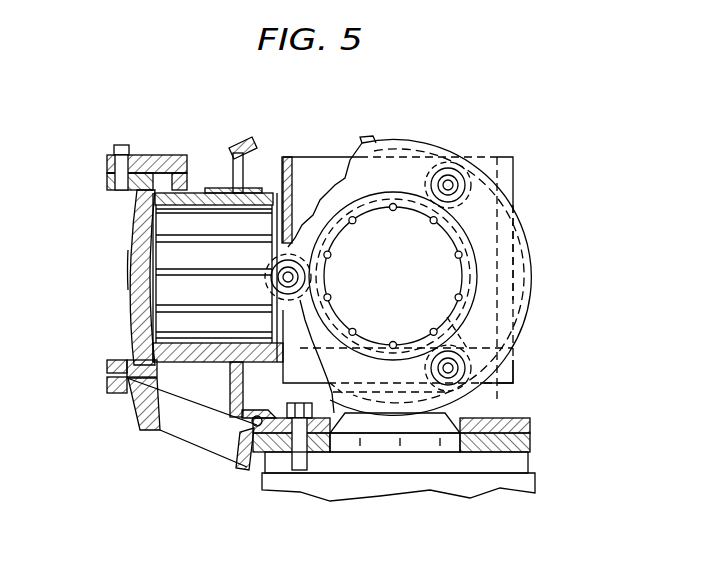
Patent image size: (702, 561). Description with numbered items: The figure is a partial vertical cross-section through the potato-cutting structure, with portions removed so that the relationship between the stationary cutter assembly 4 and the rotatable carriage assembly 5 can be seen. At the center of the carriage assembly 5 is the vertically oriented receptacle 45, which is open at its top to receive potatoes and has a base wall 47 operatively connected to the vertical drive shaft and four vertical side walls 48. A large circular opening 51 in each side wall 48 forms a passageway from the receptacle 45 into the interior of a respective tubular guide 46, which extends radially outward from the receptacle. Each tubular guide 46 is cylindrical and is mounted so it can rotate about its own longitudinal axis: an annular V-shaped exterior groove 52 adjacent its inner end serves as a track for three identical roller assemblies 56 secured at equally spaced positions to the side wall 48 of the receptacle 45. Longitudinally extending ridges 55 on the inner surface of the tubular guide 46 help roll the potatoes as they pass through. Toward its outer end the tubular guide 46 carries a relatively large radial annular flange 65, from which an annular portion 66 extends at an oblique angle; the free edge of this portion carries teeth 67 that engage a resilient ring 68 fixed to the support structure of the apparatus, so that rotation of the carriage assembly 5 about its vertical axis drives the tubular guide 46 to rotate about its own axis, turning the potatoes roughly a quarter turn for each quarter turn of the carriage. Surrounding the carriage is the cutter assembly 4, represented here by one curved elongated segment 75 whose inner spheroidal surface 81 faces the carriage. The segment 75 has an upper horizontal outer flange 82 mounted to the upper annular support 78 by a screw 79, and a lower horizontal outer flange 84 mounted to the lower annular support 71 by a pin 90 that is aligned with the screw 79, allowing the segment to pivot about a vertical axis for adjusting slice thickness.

The stationary cutter assembly 4 is at (95, 155).
The carriage assembly 5 is at (472, 117).
The receptacle 45 is at (507, 157).
The tubular guide 46 is at (213, 188).
The base wall 47 is at (517, 375).
The side wall 48 is at (322, 165).
The circular opening 51 is at (262, 243).
The V-shaped exterior groove 52 is at (268, 190).
The ridges 55 is at (433, 218).
The roller assembly 56 is at (433, 180).
The radial annular flange 65 is at (230, 392).
The annular portion 66 is at (225, 448).
The teeth 67 is at (258, 135).
The resilient ring 68 is at (530, 428).
The lower annular support 71 is at (133, 405).
The curved elongated segment 75 is at (132, 240).
The upper annular support 78 is at (158, 157).
The screw 79 is at (122, 145).
The inner spheroidal surface 81 is at (128, 262).
The upper horizontal outer flange 82 is at (115, 192).
The lower horizontal outer flange 84 is at (105, 366).
The pin 90 is at (113, 358).